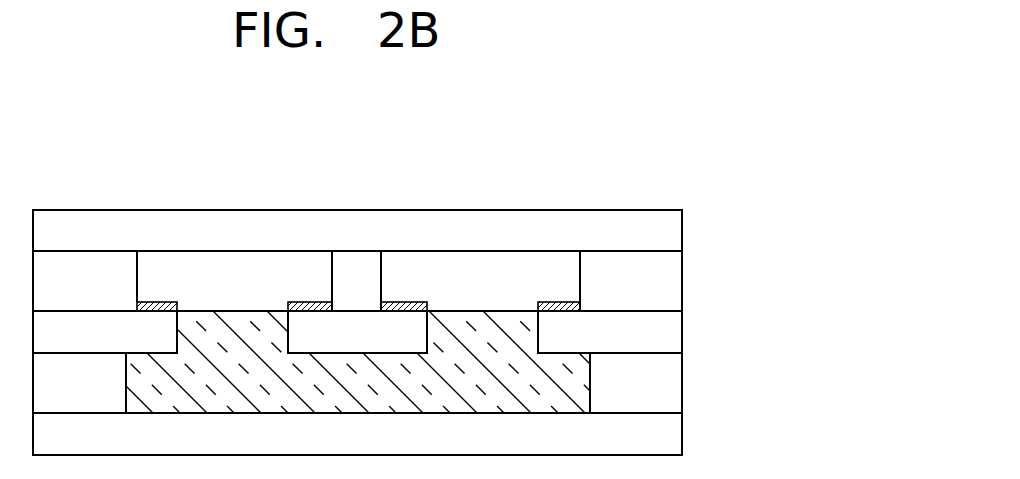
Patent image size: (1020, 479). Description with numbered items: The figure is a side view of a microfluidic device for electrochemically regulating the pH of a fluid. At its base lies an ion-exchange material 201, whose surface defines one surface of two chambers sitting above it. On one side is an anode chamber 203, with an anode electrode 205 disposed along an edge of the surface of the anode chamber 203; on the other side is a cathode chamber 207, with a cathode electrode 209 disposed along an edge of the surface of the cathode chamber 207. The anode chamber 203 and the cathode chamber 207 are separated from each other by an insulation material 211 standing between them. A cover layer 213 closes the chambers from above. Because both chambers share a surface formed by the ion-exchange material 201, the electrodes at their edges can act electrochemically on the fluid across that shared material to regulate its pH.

The ion-exchange material 201 is at (575, 382).
The anode chamber 203 is at (228, 267).
The anode electrode 205 is at (155, 300).
The cathode chamber 207 is at (476, 268).
The cathode electrode 209 is at (404, 300).
The insulation material 211 is at (355, 265).
The cover layer 213 is at (668, 233).